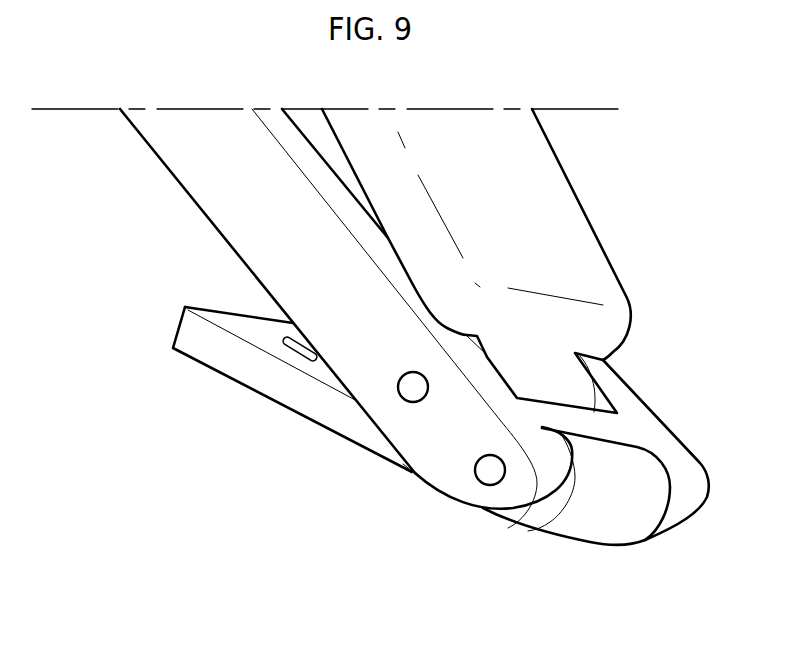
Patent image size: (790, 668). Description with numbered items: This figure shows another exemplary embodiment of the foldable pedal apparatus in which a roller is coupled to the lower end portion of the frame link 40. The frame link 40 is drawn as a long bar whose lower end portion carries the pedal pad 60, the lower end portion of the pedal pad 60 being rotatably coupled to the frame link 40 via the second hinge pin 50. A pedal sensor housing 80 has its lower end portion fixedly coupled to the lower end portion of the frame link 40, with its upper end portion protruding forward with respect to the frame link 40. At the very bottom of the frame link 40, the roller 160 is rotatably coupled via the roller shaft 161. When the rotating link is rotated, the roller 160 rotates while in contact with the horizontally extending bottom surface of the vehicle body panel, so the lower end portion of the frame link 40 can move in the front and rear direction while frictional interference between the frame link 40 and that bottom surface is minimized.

The frame link 40 is at (215, 195).
The pedal pad 60 is at (545, 197).
The pedal sensor housing 80 is at (193, 335).
The second hinge pin 50 is at (413, 387).
The roller 160 is at (605, 517).
The roller shaft 161 is at (489, 472).